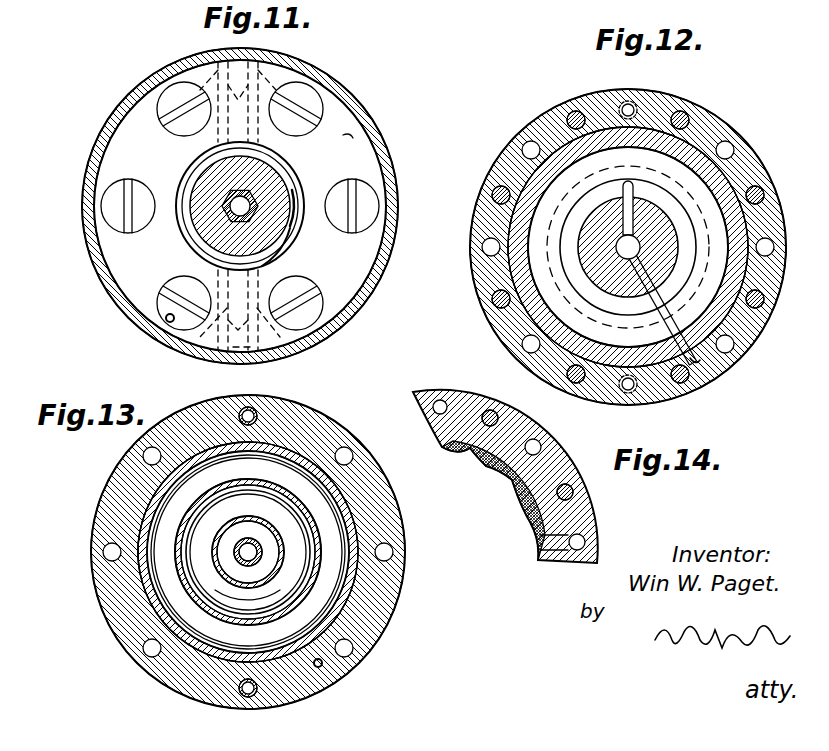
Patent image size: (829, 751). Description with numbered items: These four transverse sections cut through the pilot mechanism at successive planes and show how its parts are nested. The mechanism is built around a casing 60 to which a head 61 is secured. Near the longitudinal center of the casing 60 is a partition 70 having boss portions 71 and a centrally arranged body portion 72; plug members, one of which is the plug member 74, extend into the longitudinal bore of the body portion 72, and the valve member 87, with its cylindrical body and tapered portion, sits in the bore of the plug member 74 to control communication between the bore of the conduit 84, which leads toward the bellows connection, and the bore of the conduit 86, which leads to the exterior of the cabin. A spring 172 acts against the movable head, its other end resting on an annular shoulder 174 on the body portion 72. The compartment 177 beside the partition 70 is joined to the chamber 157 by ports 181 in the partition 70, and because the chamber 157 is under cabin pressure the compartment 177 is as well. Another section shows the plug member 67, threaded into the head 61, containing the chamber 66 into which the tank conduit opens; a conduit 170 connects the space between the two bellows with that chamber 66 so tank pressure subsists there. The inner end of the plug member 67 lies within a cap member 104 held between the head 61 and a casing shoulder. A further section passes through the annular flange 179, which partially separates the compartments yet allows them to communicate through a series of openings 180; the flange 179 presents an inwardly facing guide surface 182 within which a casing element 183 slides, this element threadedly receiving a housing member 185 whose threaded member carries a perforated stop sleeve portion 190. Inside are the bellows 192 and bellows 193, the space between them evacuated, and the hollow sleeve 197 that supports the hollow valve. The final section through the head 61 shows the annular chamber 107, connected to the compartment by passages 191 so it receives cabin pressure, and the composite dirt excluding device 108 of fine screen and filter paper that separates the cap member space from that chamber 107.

In FIG. 11, the casing 60 is at (350, 97).
In FIG. 12, the casing 60 is at (716, 120).
In FIG. 13, the casing 60 is at (398, 516).
In FIG. 14, the head 61 is at (455, 392).
In FIG. 12, the chamber 66 is at (641, 245).
In FIG. 12, the plug member 67 is at (598, 258).
In FIG. 11, the partition 70 is at (130, 135).
In FIG. 11, the boss portions 71 is at (183, 67).
In FIG. 11, the body portion 72 is at (207, 217).
In FIG. 11, the plug member 74 is at (213, 195).
In FIG. 11, the conduit 84 is at (270, 72).
In FIG. 12, the conduit 84 is at (618, 101).
In FIG. 13, the conduit 84 is at (252, 407).
In FIG. 11, the conduit 86 is at (188, 343).
In FIG. 12, the conduit 86 is at (619, 398).
In FIG. 13, the conduit 86 is at (240, 690).
In FIG. 11, the valve member 87 is at (243, 205).
In FIG. 12, the cap member 104 is at (713, 177).
In FIG. 14, the annular chamber 107 is at (538, 520).
In FIG. 14, the dirt excluding device 108 is at (516, 500).
In FIG. 11, the chamber 157 is at (345, 136).
In FIG. 11, the conduit 170 is at (165, 320).
In FIG. 12, the conduit 170 is at (699, 363).
In FIG. 13, the conduit 170 is at (323, 667).
In FIG. 11, the spring 172 is at (295, 202).
In FIG. 11, the annular shoulder 174 is at (287, 250).
In FIG. 11, the compartment 177 is at (167, 100).
In FIG. 13, the annular flange 179 is at (297, 455).
In FIG. 13, the openings 180 is at (368, 560).
In FIG. 11, the ports 181 is at (158, 300).
In FIG. 11, the guide surface 182 is at (292, 107).
In FIG. 13, the guide surface 182 is at (137, 515).
In FIG. 11, the casing element 183 is at (356, 203).
In FIG. 13, the casing element 183 is at (237, 558).
In FIG. 11, the housing member 185 is at (333, 213).
In FIG. 13, the housing member 185 is at (300, 483).
In FIG. 13, the stop sleeve portion 190 is at (303, 517).
In FIG. 14, the passages 191 is at (541, 448).
In FIG. 13, the bellows 192 is at (283, 492).
In FIG. 13, the bellows 193 is at (243, 600).
In FIG. 13, the hollow sleeve 197 is at (222, 582).